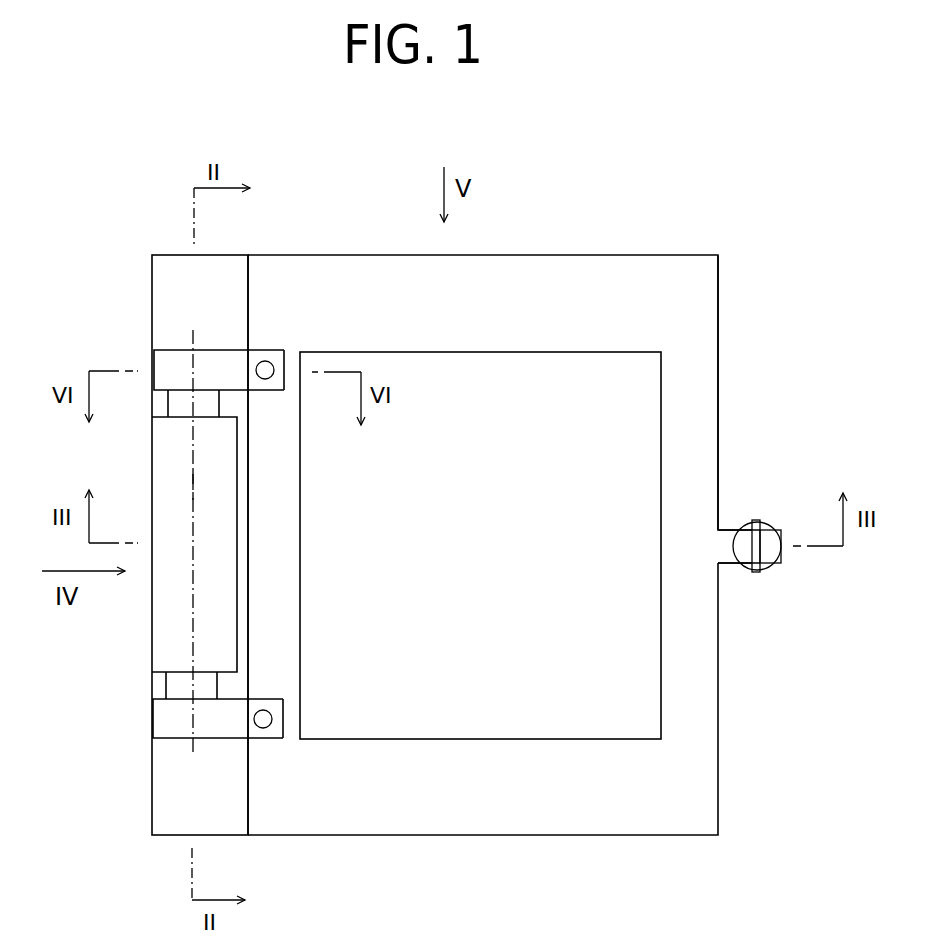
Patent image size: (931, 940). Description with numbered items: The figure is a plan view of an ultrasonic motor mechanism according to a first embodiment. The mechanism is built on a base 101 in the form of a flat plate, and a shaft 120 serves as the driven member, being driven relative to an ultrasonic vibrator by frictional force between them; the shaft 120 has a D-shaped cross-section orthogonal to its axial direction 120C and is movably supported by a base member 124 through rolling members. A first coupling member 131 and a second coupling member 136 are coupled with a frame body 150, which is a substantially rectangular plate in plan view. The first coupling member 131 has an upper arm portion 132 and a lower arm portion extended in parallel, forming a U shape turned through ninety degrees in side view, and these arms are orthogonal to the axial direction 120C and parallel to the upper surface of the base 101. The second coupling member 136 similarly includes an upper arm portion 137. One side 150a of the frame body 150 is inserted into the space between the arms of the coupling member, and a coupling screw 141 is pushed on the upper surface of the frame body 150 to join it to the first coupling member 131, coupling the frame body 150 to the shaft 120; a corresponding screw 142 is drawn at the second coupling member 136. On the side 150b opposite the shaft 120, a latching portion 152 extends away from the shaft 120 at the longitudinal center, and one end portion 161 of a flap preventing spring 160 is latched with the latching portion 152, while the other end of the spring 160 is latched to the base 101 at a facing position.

The base 101 is at (170, 818).
The shaft 120 is at (140, 546).
The axial direction 120C is at (193, 488).
The base member 124 is at (163, 642).
The first coupling member 131 is at (172, 358).
The upper arm portion 132 is at (277, 358).
The second coupling member 136 is at (170, 727).
The upper arm portion 137 is at (275, 730).
The coupling screw 141 is at (265, 361).
The lower pivot pin 142 is at (263, 728).
The frame body 150 is at (665, 277).
The side 150a is at (248, 280).
The side 150b is at (719, 287).
The latching portion 152 is at (727, 553).
The flap preventing spring 160 is at (760, 572).
The one end portion 161 is at (762, 543).